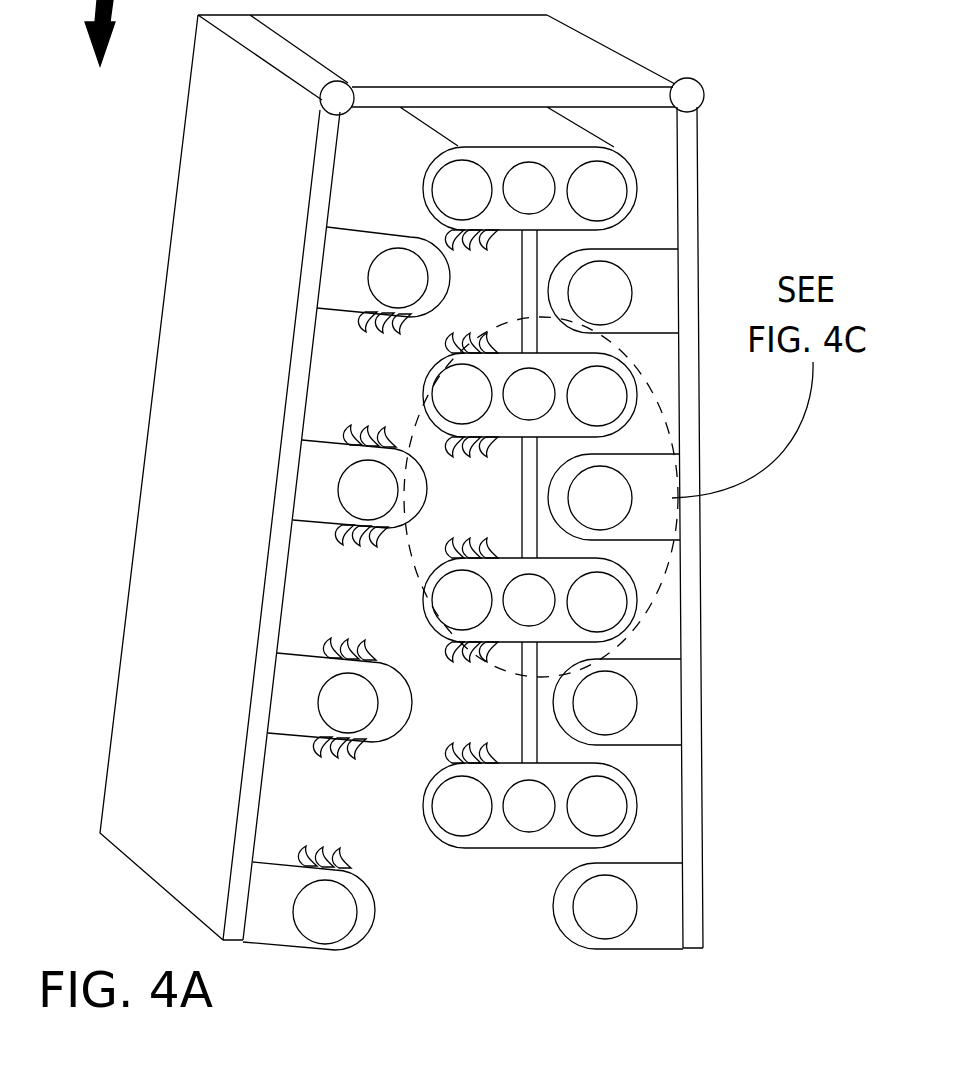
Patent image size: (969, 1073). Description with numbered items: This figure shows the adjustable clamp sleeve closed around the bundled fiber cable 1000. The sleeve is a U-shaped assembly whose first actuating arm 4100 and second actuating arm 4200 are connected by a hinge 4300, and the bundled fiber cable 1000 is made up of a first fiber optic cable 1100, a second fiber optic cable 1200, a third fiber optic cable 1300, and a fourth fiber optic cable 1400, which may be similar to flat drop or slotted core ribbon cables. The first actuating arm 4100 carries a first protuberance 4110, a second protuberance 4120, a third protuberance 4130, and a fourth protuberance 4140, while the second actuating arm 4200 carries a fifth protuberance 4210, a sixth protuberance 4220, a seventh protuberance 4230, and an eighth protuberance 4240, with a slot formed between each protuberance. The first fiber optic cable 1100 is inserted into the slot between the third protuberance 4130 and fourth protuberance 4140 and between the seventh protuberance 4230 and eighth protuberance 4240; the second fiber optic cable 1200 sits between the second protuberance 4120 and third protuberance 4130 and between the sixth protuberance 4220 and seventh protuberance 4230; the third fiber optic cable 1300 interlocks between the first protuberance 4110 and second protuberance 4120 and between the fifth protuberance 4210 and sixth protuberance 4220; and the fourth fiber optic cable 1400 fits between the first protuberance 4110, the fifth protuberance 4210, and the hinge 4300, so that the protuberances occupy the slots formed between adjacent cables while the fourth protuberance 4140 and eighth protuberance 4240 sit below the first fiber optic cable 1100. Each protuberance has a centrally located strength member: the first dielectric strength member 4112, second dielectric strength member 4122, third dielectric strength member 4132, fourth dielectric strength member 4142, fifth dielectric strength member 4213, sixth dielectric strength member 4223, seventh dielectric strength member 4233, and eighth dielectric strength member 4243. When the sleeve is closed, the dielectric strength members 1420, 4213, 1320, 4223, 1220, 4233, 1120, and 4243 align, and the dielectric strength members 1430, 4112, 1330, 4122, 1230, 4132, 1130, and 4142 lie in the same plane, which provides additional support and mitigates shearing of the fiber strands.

The bundled fiber cable 1000 is at (530, 848).
The first fiber optic cable 1100 is at (487, 795).
The dielectric strength member 1120 is at (462, 806).
The dielectric strength member 1130 is at (597, 806).
The second fiber optic cable 1200 is at (490, 600).
The dielectric strength member 1220 is at (462, 600).
The dielectric strength member 1230 is at (597, 602).
The third fiber optic cable 1300 is at (492, 395).
The dielectric strength member 1320 is at (462, 394).
The dielectric strength member 1330 is at (597, 396).
The fourth fiber optic cable 1400 is at (498, 198).
The dielectric strength member 1420 is at (462, 190).
The dielectric strength member 1430 is at (597, 191).
The first actuating arm 4100 is at (703, 803).
The first protuberance 4110 is at (675, 264).
The first dielectric strength member 4112 is at (600, 293).
The second protuberance 4120 is at (674, 461).
The second dielectric strength member 4122 is at (600, 498).
The third protuberance 4130 is at (675, 698).
The third dielectric strength member 4132 is at (605, 703).
The fourth protuberance 4140 is at (673, 902).
The fourth dielectric strength member 4142 is at (605, 907).
The second actuating arm 4200 is at (220, 477).
The fifth protuberance 4210 is at (346, 272).
The fifth dielectric strength member 4213 is at (398, 278).
The sixth protuberance 4220 is at (320, 486).
The sixth dielectric strength member 4223 is at (368, 490).
The seventh protuberance 4230 is at (307, 682).
The seventh dielectric strength member 4233 is at (348, 703).
The eighth protuberance 4240 is at (276, 880).
The eighth dielectric strength member 4243 is at (325, 912).
The hinge 4300 is at (451, 81).